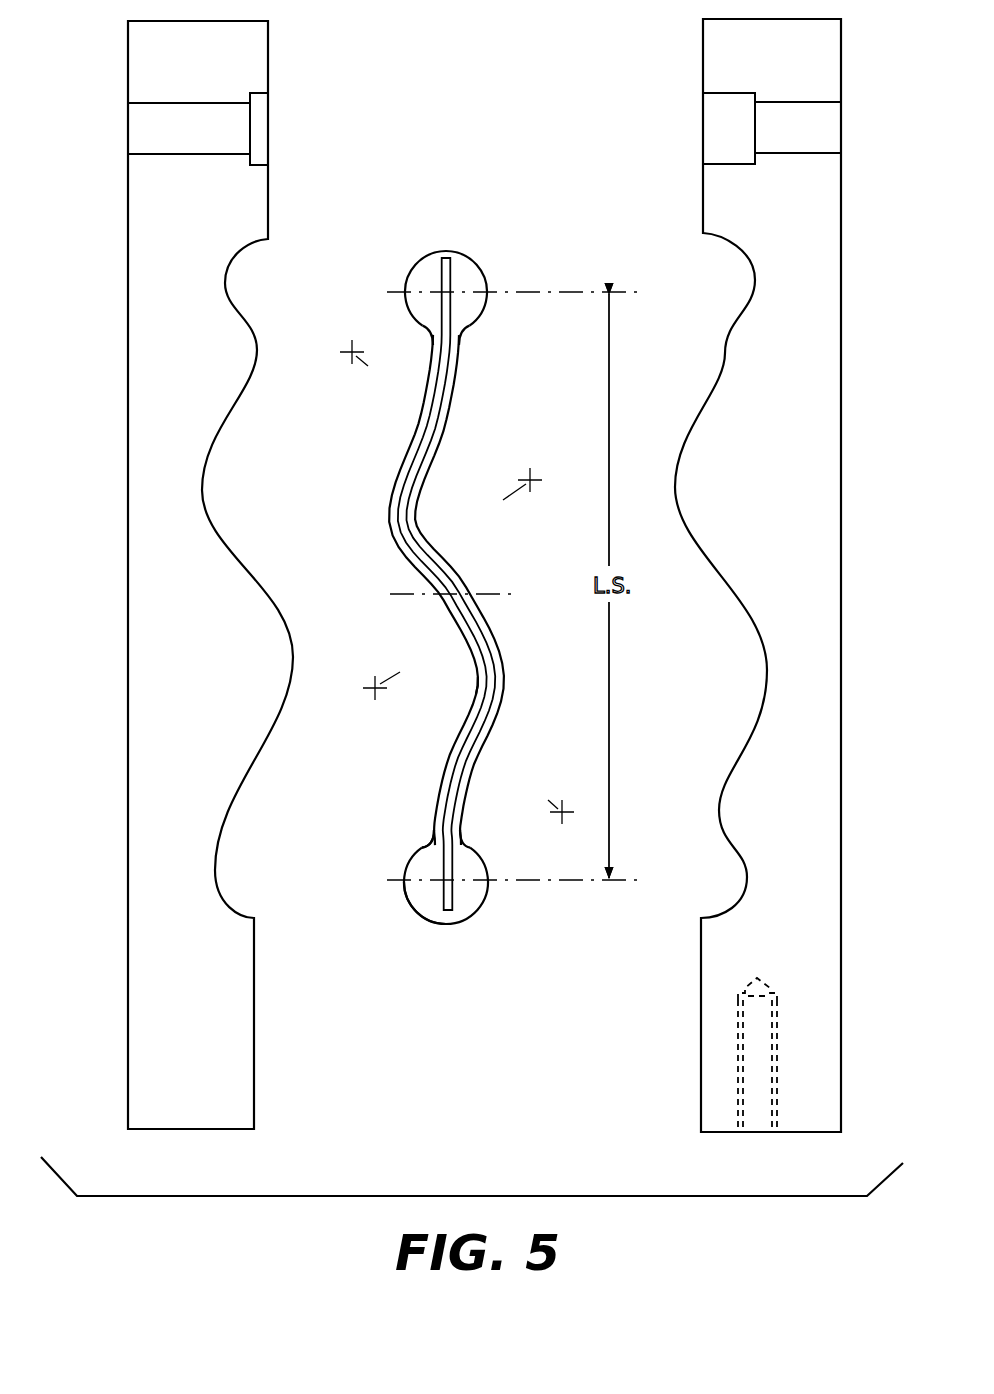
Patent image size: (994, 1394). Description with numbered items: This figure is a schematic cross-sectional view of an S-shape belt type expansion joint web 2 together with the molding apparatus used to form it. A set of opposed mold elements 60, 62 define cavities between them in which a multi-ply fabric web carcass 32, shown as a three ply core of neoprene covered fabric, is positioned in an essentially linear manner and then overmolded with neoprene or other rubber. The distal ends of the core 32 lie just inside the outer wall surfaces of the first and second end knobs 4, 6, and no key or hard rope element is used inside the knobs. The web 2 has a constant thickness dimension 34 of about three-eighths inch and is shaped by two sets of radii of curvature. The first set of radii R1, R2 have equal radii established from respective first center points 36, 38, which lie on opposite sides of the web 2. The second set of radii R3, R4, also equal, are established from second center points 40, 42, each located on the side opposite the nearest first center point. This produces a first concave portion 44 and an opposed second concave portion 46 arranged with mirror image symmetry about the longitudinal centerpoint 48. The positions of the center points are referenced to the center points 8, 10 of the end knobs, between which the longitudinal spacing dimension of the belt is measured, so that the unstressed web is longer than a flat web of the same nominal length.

The web 2 is at (439, 928).
The first end knob 4 is at (452, 251).
The second end knob 6 is at (402, 898).
The center point of end knob 8 is at (437, 287).
The center point of end knob 10 is at (456, 881).
The multi-ply fabric web carcass 32 is at (418, 860).
The thickness dimension 34 is at (434, 771).
The first center point 36 is at (351, 340).
The first center point 38 is at (563, 814).
The second center point 40 is at (374, 686).
The second center point 42 is at (530, 478).
The first concave portion 44 is at (386, 518).
The second concave portion 46 is at (506, 683).
The longitudinal centerpoint 48 is at (508, 594).
The mold element 60 is at (270, 68).
The mold element 62 is at (712, 47).
The radius of curvature R1 is at (423, 408).
The radius of curvature R2 is at (480, 760).
The radius of curvature R3 is at (468, 637).
The radius of curvature R4 is at (434, 552).